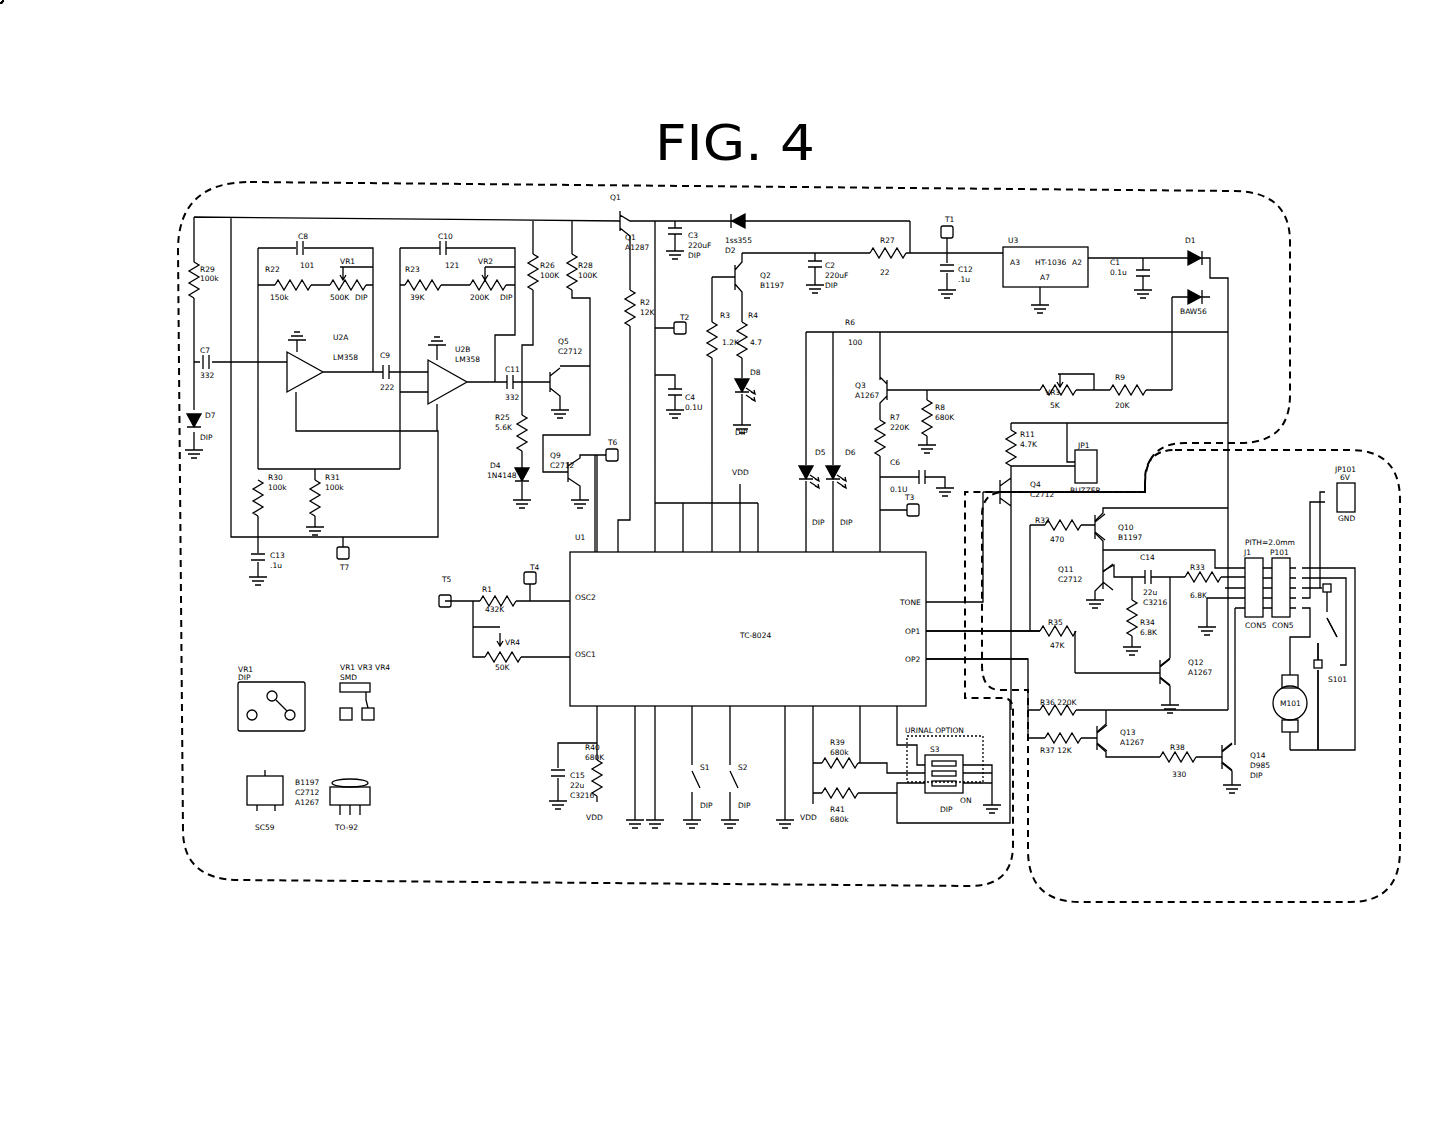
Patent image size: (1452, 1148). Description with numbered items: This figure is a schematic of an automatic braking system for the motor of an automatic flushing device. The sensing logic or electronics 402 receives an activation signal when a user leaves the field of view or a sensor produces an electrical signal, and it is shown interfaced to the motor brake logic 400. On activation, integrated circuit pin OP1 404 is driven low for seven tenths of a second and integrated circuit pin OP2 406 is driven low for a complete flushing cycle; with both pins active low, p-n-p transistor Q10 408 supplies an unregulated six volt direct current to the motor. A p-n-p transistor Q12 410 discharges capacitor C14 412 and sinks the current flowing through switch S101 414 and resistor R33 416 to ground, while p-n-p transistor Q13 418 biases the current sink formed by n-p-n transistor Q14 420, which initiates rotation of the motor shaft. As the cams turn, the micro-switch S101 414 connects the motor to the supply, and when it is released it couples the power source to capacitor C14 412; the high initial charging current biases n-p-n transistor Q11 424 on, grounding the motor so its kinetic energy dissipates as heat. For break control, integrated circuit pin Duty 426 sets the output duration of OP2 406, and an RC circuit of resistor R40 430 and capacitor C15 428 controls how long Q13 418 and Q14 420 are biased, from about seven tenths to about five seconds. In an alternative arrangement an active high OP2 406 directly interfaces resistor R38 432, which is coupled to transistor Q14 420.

The motor brake logic 400 is at (1298, 448).
The sensing logic or electronics 402 is at (1293, 340).
The integrated circuit pin OP1 404 is at (905, 631).
The integrated circuit pin OP2 406 is at (905, 659).
The p-n-p transistor Q10 408 is at (1133, 520).
The p-n-p transistor Q12 410 is at (1148, 681).
The capacitor C14 412 is at (1146, 552).
The switch S101 414 is at (1332, 697).
The resistor R33 416 is at (1198, 557).
The p-n-p transistor Q13 418 is at (1103, 758).
The n-p-n transistor Q14 420 is at (1260, 783).
The n-p-n transistor Q11 424 is at (1084, 585).
The integrated circuit pin Duty 426 is at (597, 675).
The capacitor C15 428 is at (553, 775).
The resistor R40 430 is at (618, 785).
The resistor R38 432 is at (1165, 772).